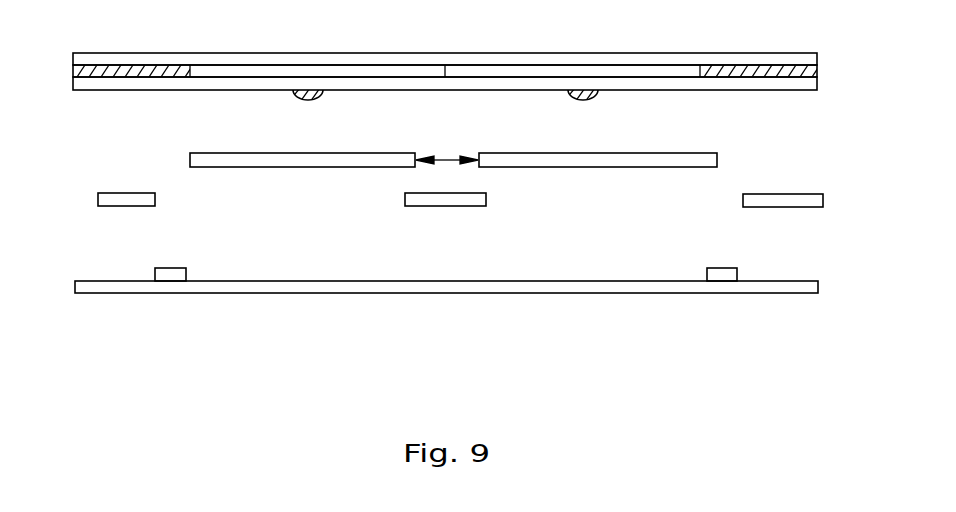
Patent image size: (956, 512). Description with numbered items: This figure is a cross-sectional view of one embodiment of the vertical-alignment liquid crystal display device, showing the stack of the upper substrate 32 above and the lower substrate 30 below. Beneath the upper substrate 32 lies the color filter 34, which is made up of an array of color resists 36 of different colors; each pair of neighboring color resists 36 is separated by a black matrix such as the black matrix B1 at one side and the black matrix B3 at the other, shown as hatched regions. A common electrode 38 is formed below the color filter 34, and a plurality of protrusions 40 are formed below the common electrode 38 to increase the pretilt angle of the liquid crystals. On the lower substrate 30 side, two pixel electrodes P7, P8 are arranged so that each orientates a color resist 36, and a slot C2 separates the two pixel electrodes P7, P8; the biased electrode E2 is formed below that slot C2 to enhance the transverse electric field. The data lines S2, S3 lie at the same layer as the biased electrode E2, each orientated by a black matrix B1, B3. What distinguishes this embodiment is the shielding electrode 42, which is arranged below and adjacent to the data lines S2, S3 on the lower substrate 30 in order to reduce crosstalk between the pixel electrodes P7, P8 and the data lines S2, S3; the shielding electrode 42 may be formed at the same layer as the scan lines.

The upper substrate 32 is at (73, 55).
The color filter 34 is at (73, 71).
The common electrode 38 is at (73, 88).
The color resists 36 is at (240, 72).
The protrusions 40 is at (305, 93).
The shielding electrode 42 is at (173, 276).
The lower substrate 30 is at (75, 282).
The black matrix B1 is at (114, 72).
The black matrix B3 is at (747, 70).
The pixel electrode P7 is at (200, 158).
The pixel electrode P8 is at (692, 162).
The slot C2 is at (447, 146).
The data line S2 is at (100, 197).
The data line S3 is at (790, 198).
The biased electrode E2 is at (413, 203).